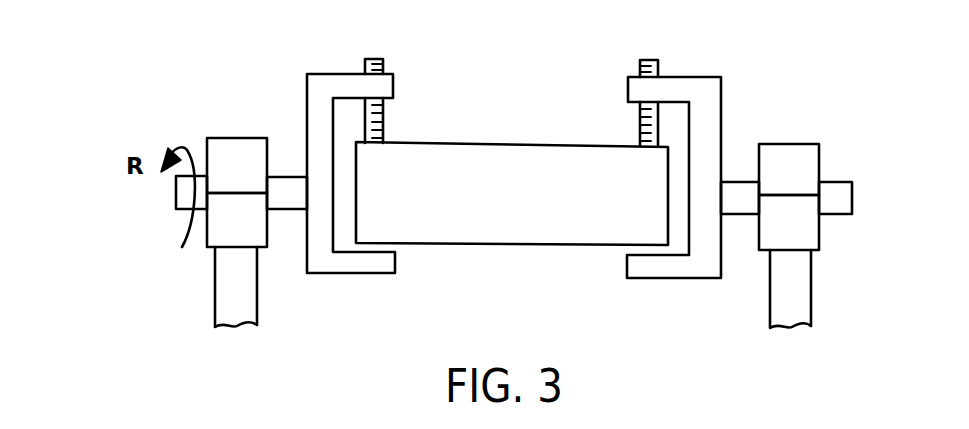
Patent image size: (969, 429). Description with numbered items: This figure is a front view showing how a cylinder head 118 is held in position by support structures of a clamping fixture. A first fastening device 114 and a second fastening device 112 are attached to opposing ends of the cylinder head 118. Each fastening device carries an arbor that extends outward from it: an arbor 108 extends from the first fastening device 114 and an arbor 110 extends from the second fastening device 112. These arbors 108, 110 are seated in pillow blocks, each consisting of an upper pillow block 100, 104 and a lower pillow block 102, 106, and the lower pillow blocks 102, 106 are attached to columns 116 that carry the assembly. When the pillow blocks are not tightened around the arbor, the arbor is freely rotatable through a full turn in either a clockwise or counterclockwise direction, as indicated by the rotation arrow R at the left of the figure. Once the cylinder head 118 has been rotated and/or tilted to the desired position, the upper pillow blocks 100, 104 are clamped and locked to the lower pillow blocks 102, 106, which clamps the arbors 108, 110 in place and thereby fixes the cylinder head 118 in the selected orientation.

The upper pillow block 100 is at (243, 137).
The lower pillow block 102 is at (218, 238).
The upper pillow block 104 is at (790, 143).
The lower pillow block 106 is at (822, 240).
The arbor 108 is at (282, 203).
The arbor 110 is at (842, 185).
The second fastening device 112 is at (688, 78).
The first fastening device 114 is at (333, 74).
The column 116 is at (218, 297).
The cylinder head 118 is at (507, 245).